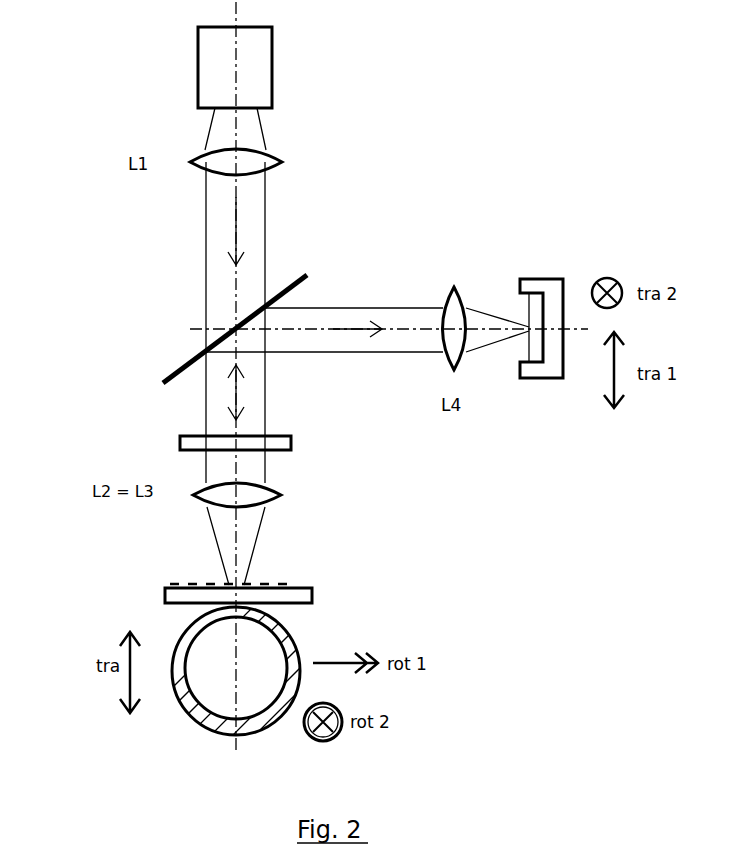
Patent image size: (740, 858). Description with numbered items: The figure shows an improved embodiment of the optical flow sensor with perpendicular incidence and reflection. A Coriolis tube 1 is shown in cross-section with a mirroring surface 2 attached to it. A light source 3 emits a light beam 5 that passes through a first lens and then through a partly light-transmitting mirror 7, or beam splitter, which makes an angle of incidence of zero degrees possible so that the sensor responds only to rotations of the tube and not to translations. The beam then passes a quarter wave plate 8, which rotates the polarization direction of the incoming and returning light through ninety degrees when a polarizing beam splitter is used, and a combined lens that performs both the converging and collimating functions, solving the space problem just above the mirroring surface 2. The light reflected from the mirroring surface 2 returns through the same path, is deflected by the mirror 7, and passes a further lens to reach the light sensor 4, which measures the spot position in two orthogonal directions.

The Coriolis tube 1 is at (252, 723).
The mirroring surface 2 is at (292, 598).
The light source 3 is at (258, 67).
The light sensor 4 is at (552, 290).
The light beam 5 is at (252, 233).
The partly light-transmitting mirror 7 is at (206, 347).
The quarter wave plate 8 is at (200, 441).